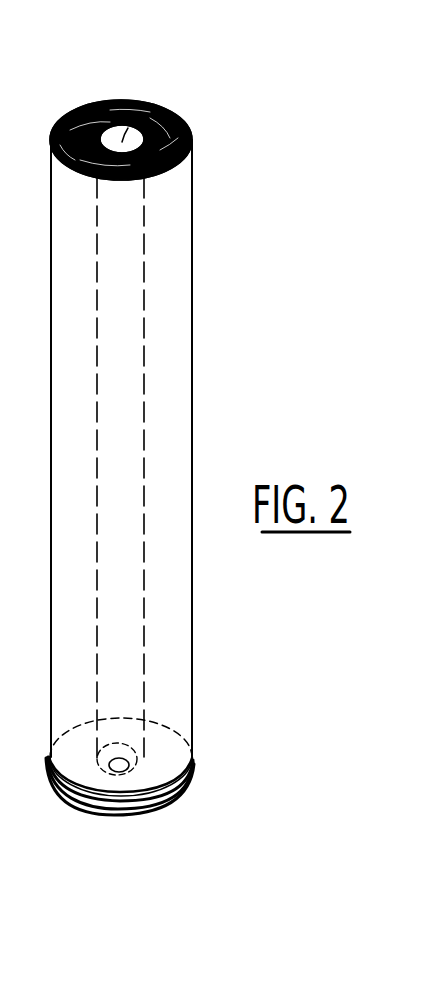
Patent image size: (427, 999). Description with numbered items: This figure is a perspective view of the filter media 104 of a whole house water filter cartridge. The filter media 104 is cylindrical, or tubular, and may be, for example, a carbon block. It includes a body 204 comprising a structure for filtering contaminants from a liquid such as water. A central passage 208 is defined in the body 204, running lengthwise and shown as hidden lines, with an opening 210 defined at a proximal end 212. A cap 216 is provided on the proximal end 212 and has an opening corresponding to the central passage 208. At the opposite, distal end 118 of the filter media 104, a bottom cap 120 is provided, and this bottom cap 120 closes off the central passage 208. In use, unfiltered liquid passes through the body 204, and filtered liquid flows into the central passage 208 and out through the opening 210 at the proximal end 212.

The filter media 104 is at (213, 280).
The distal end 118 is at (203, 747).
The bottom cap 120 is at (193, 780).
The body 204 is at (198, 415).
The central passage 208 is at (122, 390).
The opening 210 is at (142, 102).
The proximal end 212 is at (202, 132).
The cap 216 is at (88, 103).